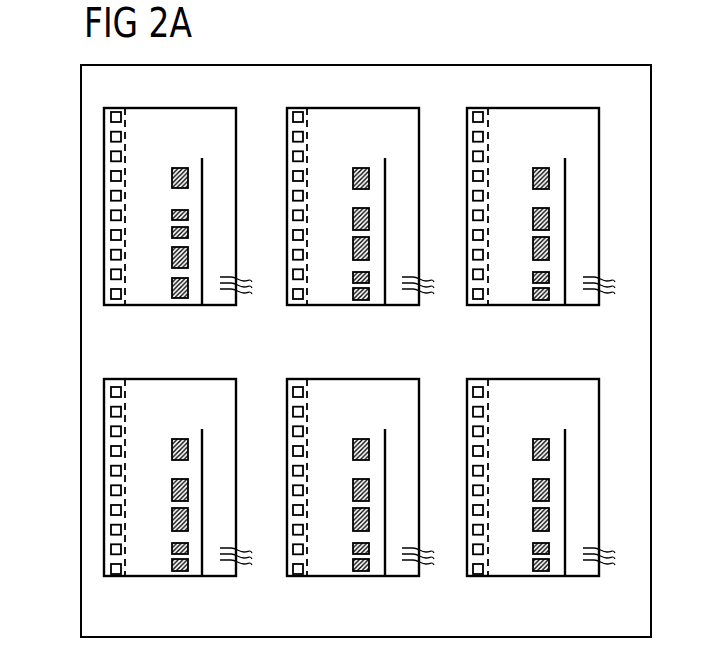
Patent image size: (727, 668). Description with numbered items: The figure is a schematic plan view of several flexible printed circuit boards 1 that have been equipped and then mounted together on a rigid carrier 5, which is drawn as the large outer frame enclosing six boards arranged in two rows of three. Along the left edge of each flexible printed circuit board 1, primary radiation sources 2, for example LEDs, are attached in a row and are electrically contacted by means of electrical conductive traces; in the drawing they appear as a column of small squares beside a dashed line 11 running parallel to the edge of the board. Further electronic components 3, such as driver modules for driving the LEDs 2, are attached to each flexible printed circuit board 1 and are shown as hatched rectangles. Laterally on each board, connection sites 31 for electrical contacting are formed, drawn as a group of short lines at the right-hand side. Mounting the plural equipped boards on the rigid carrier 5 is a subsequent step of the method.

The flexible printed circuit board 1 is at (225, 117).
The primary radiation sources 2 is at (111, 198).
The further electronic components 3 is at (178, 168).
The rigid carrier 5 is at (651, 483).
The separation line 11 is at (116, 108).
The connection sites 31 is at (435, 427).